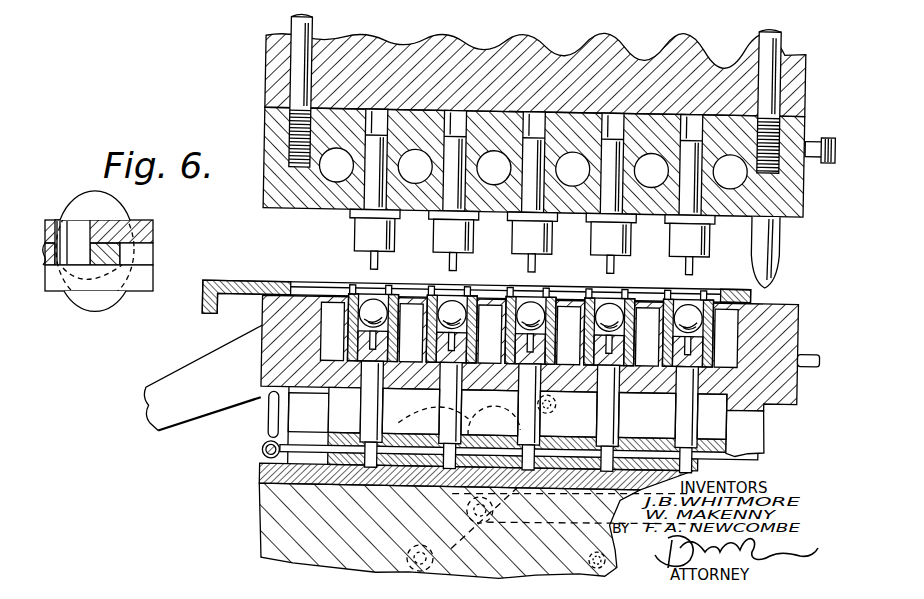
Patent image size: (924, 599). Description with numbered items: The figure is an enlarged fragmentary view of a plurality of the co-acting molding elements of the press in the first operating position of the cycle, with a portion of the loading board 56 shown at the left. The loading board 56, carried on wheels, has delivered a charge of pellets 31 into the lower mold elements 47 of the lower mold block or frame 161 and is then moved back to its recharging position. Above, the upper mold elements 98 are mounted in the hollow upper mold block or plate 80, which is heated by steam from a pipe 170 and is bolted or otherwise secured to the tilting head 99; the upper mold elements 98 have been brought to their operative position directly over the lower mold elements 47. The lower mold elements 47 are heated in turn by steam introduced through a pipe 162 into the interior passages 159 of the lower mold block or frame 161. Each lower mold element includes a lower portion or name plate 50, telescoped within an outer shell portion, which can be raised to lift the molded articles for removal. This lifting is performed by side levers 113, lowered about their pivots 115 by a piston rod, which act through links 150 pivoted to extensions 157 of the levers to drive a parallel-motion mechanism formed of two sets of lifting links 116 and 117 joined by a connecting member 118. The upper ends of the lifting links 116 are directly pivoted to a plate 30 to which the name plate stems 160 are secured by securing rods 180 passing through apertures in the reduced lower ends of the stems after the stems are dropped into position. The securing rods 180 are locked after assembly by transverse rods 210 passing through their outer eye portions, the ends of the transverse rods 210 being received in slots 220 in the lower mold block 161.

The loading board 56 is at (164, 222).
The tilting head 99 is at (663, 43).
The upper mold elements 98 is at (353, 232).
The pipe 170 is at (819, 133).
The hollow upper mold block or plate 80 is at (792, 211).
The pellets 31 is at (448, 286).
The interior passages 159 is at (540, 298).
The lower mold elements 47 is at (585, 298).
The lower mold block or frame 161 is at (268, 370).
The side levers 113 is at (176, 360).
The slots 220 is at (272, 419).
The securing rods 180 is at (303, 446).
The plate 30 is at (340, 436).
The name plates 50 is at (386, 400).
The name plate stems 160 is at (372, 428).
The lifting links 116 is at (554, 414).
The pivots 115 is at (459, 417).
The links 150 is at (569, 401).
The extensions 157 is at (513, 435).
The pipe 162 is at (812, 365).
The transverse rods 210 is at (264, 452).
The lifting links 117 is at (404, 553).
The connecting member 118 is at (477, 530).